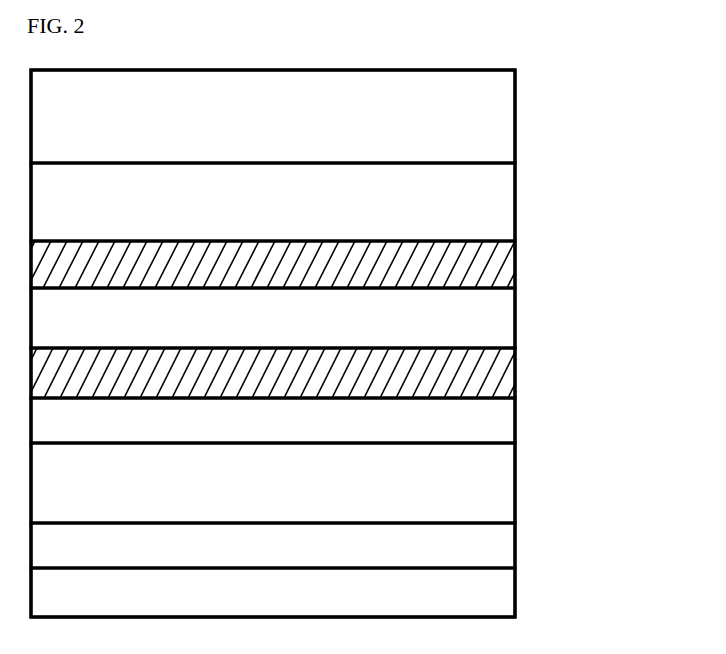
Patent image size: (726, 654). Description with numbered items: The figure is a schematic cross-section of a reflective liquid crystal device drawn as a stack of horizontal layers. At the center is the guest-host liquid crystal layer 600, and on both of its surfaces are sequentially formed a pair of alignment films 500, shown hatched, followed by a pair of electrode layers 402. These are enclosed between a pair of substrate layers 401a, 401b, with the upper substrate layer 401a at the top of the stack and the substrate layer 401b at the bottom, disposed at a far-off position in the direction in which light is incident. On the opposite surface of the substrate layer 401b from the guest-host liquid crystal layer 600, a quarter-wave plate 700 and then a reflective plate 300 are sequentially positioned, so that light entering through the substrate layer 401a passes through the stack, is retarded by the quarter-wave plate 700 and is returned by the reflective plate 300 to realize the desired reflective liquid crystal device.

The substrate layer 401a is at (518, 120).
The electrode layers 402 is at (518, 211).
The alignment films 500 is at (518, 273).
The guest-host liquid crystal layer 600 is at (518, 321).
The substrate layer 401b is at (518, 491).
The quarter-wave plate 700 is at (518, 555).
The reflective plate 300 is at (518, 600).